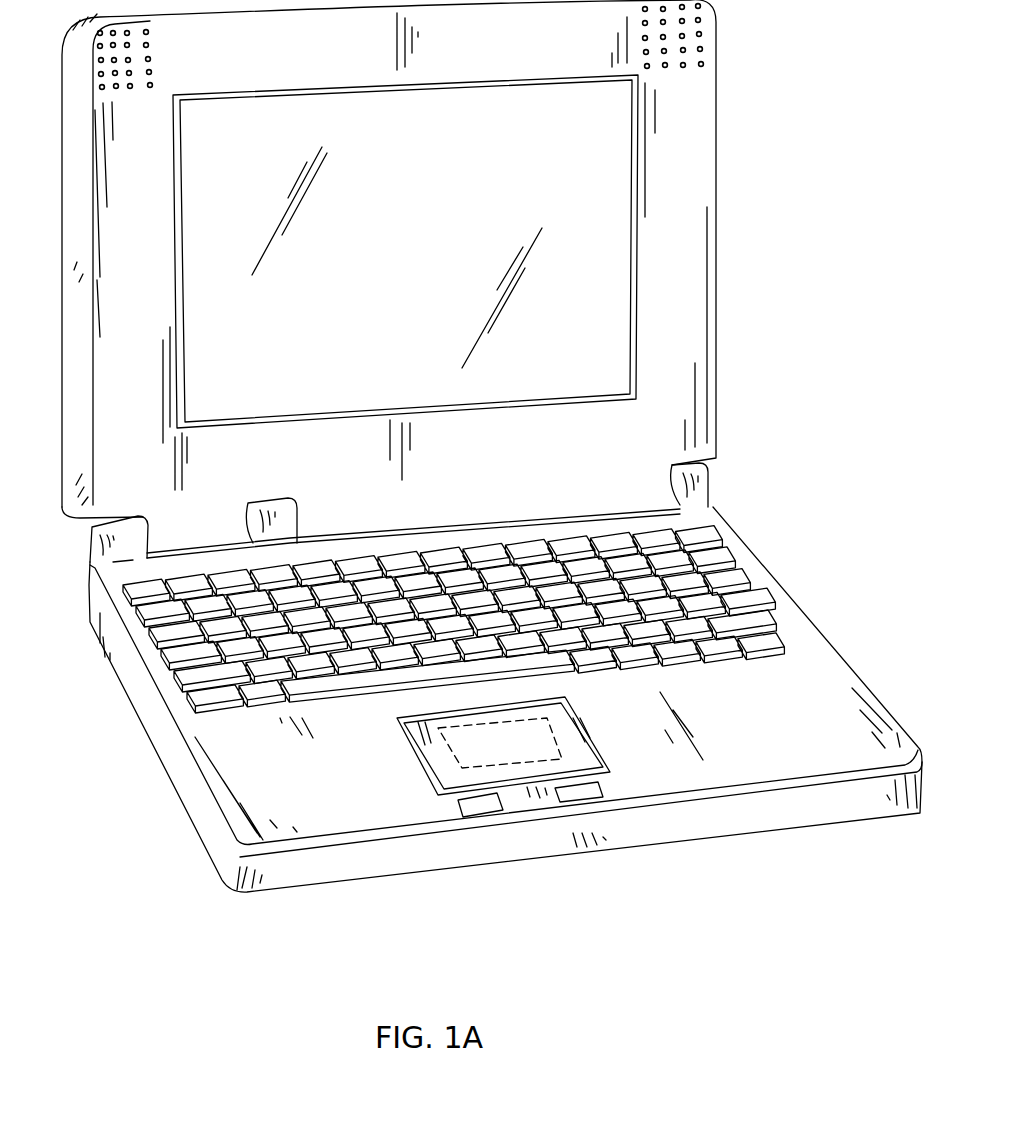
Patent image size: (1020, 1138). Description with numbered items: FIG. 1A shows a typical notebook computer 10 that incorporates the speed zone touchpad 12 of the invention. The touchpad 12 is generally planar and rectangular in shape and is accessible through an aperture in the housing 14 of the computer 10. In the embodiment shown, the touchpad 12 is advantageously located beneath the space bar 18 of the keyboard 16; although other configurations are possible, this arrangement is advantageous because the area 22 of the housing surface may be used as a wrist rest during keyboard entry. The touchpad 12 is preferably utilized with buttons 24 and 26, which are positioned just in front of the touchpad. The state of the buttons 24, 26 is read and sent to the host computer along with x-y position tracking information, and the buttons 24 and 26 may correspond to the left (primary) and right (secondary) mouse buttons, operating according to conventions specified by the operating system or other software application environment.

The notebook computer 10 is at (491, 471).
The speed zone touchpad 12 is at (440, 752).
The housing 14 is at (505, 723).
The keyboard 16 is at (700, 567).
The space bar 18 is at (484, 612).
The area 22 is at (341, 818).
The button 24 is at (500, 810).
The button 26 is at (597, 797).